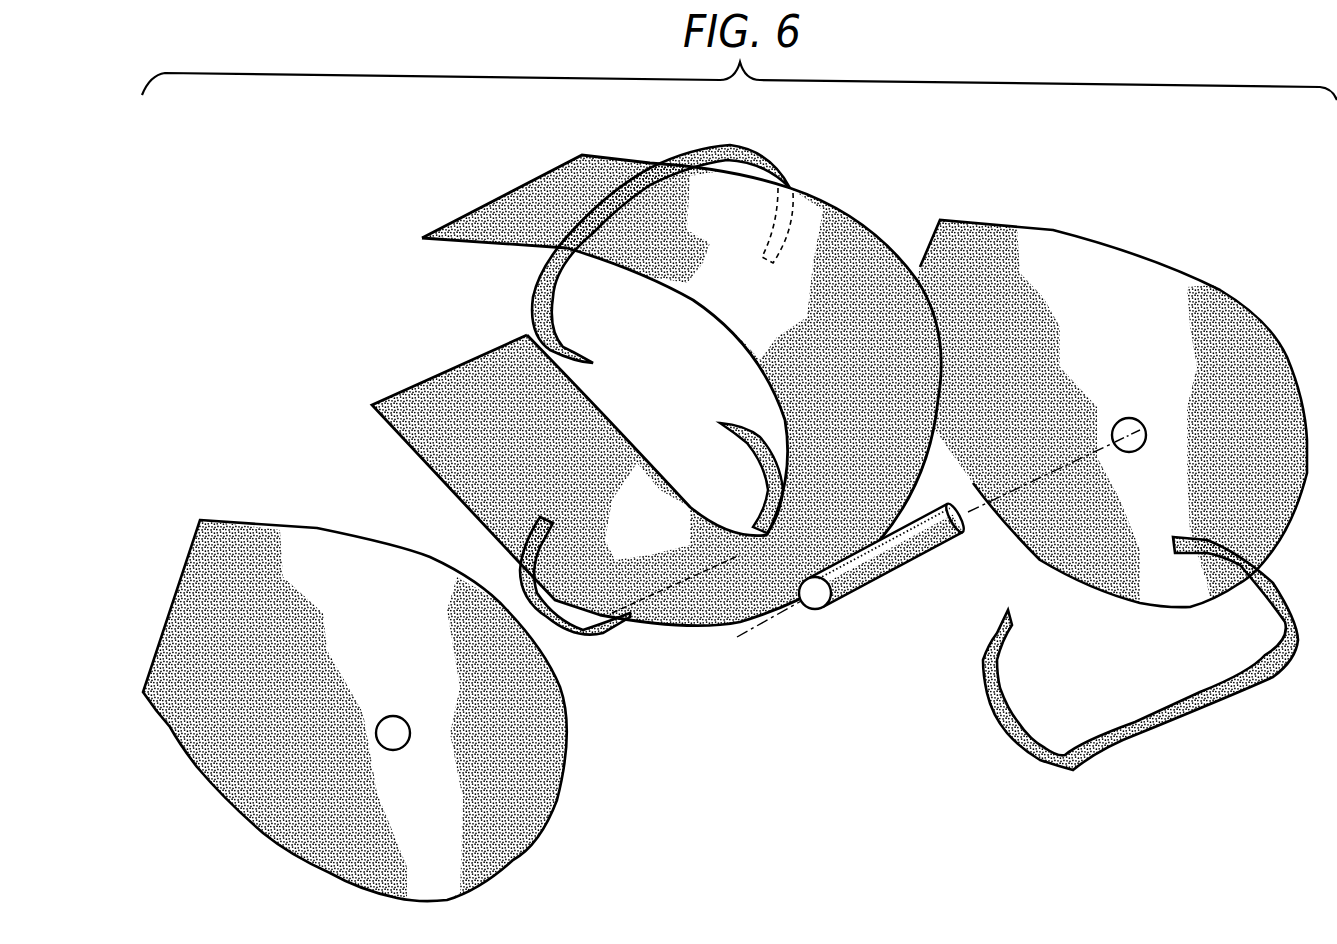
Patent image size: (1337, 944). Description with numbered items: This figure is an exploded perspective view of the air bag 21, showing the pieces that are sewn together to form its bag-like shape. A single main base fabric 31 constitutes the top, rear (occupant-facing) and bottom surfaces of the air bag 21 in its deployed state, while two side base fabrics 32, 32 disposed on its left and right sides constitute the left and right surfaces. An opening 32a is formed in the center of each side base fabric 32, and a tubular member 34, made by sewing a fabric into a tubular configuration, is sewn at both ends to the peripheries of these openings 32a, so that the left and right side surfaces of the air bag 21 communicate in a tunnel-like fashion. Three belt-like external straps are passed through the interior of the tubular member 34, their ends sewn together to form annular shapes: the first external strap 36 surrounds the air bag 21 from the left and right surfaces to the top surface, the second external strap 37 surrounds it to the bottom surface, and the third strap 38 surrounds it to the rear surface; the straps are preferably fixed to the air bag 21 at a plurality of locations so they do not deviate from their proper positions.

The air bag 21 is at (1157, 211).
The main base fabric 31 is at (843, 231).
The side base fabric 32 is at (1222, 291).
The opening 32a is at (393, 718).
The tubular member 34 is at (853, 604).
The first external strap 36 is at (533, 293).
The second external strap 37 is at (597, 641).
The third external strap 38 is at (1174, 722).